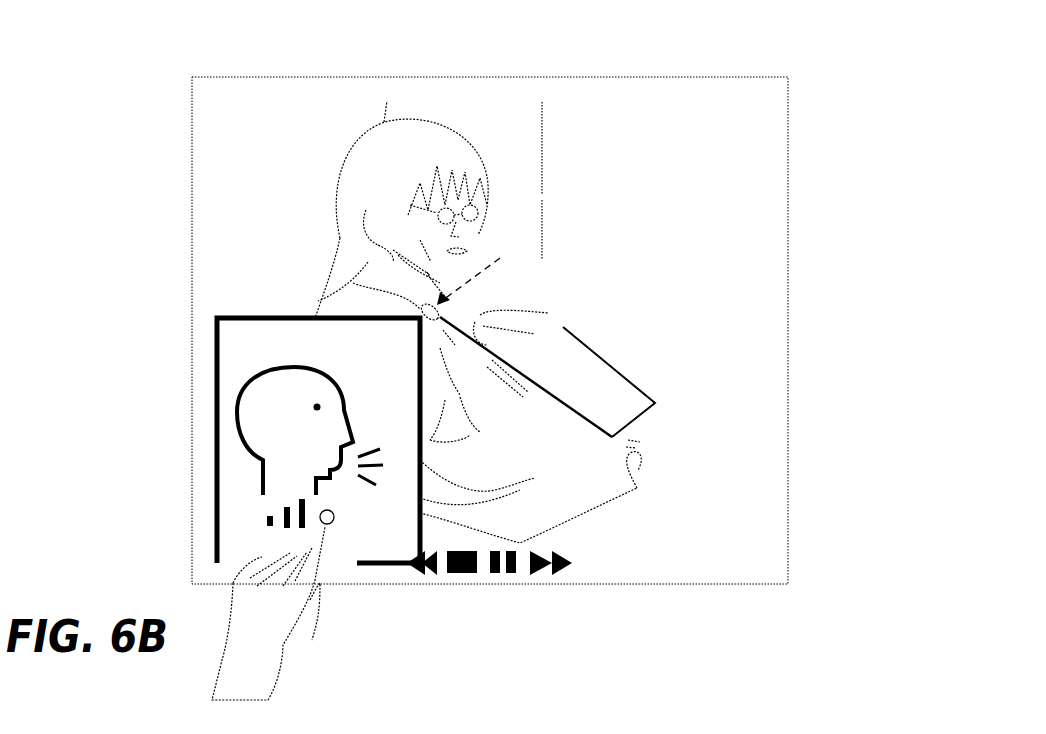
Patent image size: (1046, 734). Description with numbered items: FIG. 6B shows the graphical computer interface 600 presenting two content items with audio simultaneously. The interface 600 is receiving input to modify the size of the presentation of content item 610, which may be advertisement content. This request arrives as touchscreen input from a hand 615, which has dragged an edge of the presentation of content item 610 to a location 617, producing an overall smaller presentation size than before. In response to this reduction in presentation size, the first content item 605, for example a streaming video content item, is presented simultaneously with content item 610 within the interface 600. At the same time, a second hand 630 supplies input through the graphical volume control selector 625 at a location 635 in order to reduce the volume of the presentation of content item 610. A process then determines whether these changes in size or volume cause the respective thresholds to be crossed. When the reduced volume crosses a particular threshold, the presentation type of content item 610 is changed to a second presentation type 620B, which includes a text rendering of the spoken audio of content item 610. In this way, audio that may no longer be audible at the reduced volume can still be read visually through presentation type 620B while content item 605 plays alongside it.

The interface 600 is at (172, 131).
The first content item 605 is at (532, 130).
The content item 610 is at (296, 446).
The hand 615 is at (578, 367).
The location 617 is at (418, 312).
The second presentation type 620B is at (232, 393).
The volume control selector 625 is at (265, 522).
The second hand 630 is at (283, 645).
The location 635 is at (335, 515).